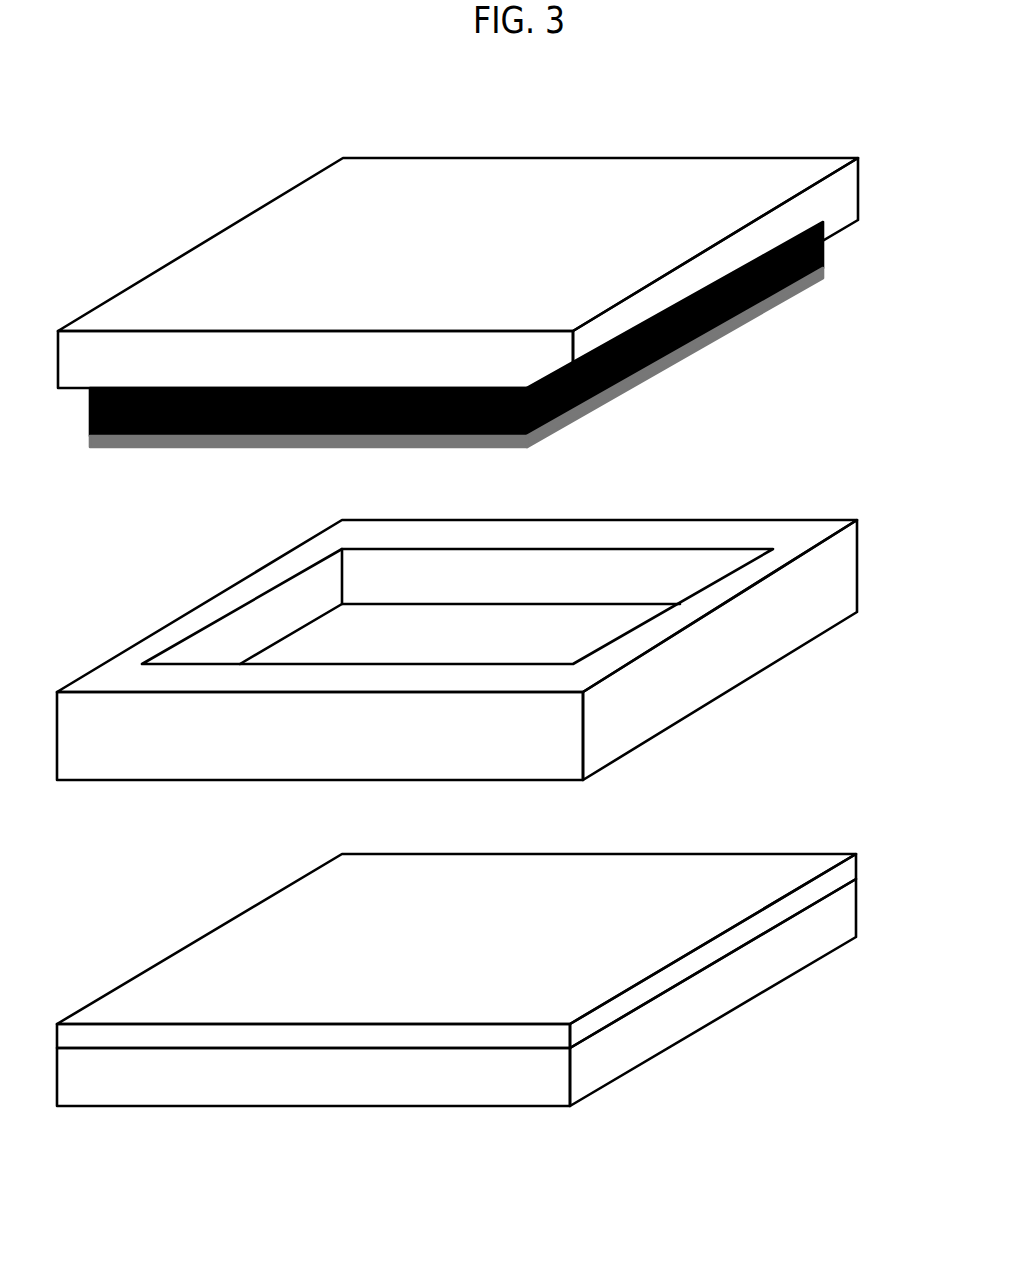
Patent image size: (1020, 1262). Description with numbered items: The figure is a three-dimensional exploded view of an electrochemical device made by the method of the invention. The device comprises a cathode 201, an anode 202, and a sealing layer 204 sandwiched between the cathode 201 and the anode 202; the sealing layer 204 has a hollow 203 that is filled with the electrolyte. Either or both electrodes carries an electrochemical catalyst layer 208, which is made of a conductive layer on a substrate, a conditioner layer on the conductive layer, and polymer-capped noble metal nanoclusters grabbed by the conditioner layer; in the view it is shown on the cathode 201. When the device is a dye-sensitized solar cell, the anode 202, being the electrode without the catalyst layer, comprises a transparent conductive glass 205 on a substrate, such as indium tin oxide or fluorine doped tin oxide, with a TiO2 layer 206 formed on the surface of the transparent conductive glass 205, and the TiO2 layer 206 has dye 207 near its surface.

The cathode 201 is at (456, 914).
The anode 202 is at (477, 239).
The hollow 203 is at (593, 630).
The sealing layer 204 is at (460, 590).
The transparent conductive glass 205 is at (300, 277).
The TiO2 layer 206 is at (493, 334).
The dye 207 is at (678, 352).
The electrochemical catalyst layer 208 is at (287, 945).